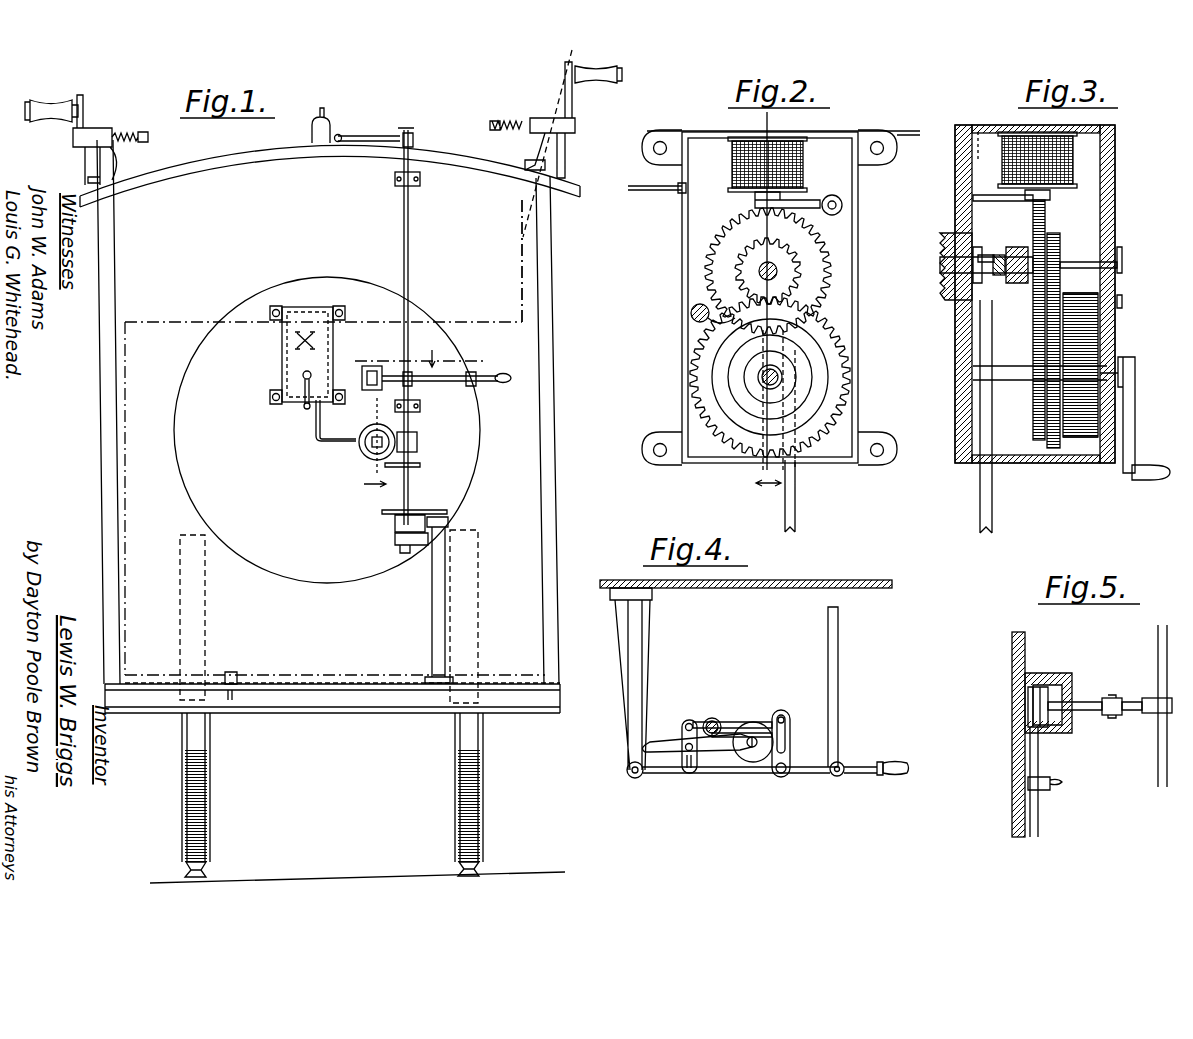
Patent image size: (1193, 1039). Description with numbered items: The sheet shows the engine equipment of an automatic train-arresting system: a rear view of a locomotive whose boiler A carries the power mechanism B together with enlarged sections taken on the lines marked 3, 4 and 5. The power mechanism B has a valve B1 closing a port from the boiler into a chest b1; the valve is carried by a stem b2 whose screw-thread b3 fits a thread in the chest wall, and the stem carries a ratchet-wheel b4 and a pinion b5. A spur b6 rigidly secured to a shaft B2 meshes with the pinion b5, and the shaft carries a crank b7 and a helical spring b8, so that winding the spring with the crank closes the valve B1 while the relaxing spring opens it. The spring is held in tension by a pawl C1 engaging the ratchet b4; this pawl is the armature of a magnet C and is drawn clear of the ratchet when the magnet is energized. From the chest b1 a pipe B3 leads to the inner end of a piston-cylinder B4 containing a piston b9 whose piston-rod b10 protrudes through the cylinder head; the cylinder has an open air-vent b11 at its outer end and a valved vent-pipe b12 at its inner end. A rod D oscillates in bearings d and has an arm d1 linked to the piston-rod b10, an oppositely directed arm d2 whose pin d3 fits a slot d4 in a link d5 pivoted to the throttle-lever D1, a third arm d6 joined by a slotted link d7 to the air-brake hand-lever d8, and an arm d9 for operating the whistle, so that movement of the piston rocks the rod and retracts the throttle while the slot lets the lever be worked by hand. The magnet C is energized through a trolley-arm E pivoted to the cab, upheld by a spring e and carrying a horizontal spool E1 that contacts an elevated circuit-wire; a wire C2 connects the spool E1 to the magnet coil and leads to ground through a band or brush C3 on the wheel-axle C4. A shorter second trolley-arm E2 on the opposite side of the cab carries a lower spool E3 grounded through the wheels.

In FIG. 1, the locomotive-boiler A is at (327, 430).
In FIG. 1, the section line 3 3 is at (313, 368).
In FIG. 2, the section line 3 3 is at (775, 320).
In FIG. 1, the section line 4 4 is at (426, 366).
In FIG. 1, the section line 5 5 is at (377, 442).
In FIG. 1, the rod D is at (417, 243).
In FIG. 4, the rod D is at (714, 718).
In FIG. 5, the rod D is at (1174, 706).
In FIG. 1, the throttle-lever D1 is at (517, 376).
In FIG. 4, the throttle-lever D1 is at (876, 756).
In FIG. 1, the bearings d is at (416, 365).
In FIG. 1, the arm d1 is at (408, 440).
In FIG. 5, the arm d1 is at (1160, 715).
In FIG. 4, the arm d2 is at (737, 722).
In FIG. 4, the pin d3 is at (785, 722).
In FIG. 4, the slot d4 is at (790, 740).
In FIG. 4, the link d5 is at (778, 762).
In FIG. 4, the third arm d6 is at (700, 720).
In FIG. 4, the slotted link d7 is at (680, 742).
In FIG. 1, the air-brake hand-lever d8 is at (400, 513).
In FIG. 4, the air-brake hand-lever d8 is at (680, 750).
In FIG. 1, the arm d9 is at (362, 127).
In FIG. 1, the spring e is at (317, 120).
In FIG. 1, the trolley-arm E is at (557, 143).
In FIG. 1, the spool or brush E1 is at (603, 85).
In FIG. 1, the second trolley-arm E2 is at (95, 137).
In FIG. 1, the brush or spool E3 is at (52, 98).
In FIG. 2, the magnet C is at (728, 157).
In FIG. 3, the magnet C is at (1045, 160).
In FIG. 2, the pawl C1 is at (812, 200).
In FIG. 3, the pawl C1 is at (1050, 197).
In FIG. 1, the wire C2 is at (520, 277).
In FIG. 1, the band or brush C3 is at (232, 700).
In FIG. 1, the wheel-axle C4 is at (338, 705).
In FIG. 2, the power mechanism B is at (770, 373).
In FIG. 3, the power mechanism B is at (1007, 307).
In FIG. 3, the valve B1 is at (945, 300).
In FIG. 3, the shaft B2 is at (1013, 385).
In FIG. 3, the pipe B3 is at (988, 487).
In FIG. 5, the piston-cylinder B4 is at (1035, 678).
In FIG. 3, the chest b1 is at (990, 250).
In FIG. 3, the stem b2 is at (1083, 262).
In FIG. 3, the screw-thread b3 is at (1008, 247).
In FIG. 2, the ratchet-wheel b4 is at (768, 271).
In FIG. 3, the ratchet-wheel b4 is at (1046, 222).
In FIG. 3, the pinion b5 is at (1064, 240).
In FIG. 3, the spur b6 is at (1032, 348).
In FIG. 3, the crank b7 is at (1140, 410).
In FIG. 3, the helical spring b8 is at (1098, 380).
In FIG. 5, the piston b9 is at (1040, 732).
In FIG. 5, the piston-rod b10 is at (1095, 693).
In FIG. 5, the air-vent b11 is at (1070, 728).
In FIG. 5, the valved vent-pipe b12 is at (1038, 800).